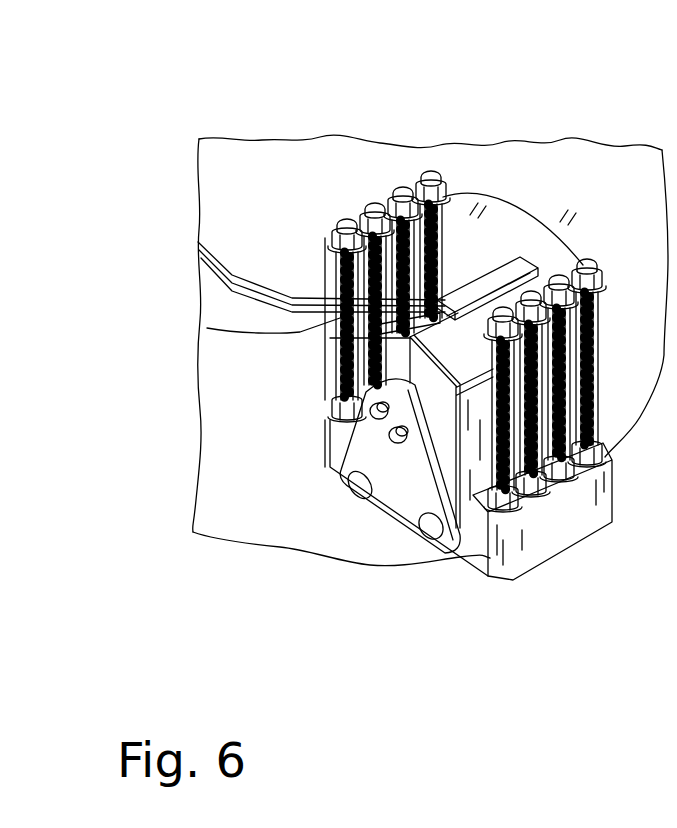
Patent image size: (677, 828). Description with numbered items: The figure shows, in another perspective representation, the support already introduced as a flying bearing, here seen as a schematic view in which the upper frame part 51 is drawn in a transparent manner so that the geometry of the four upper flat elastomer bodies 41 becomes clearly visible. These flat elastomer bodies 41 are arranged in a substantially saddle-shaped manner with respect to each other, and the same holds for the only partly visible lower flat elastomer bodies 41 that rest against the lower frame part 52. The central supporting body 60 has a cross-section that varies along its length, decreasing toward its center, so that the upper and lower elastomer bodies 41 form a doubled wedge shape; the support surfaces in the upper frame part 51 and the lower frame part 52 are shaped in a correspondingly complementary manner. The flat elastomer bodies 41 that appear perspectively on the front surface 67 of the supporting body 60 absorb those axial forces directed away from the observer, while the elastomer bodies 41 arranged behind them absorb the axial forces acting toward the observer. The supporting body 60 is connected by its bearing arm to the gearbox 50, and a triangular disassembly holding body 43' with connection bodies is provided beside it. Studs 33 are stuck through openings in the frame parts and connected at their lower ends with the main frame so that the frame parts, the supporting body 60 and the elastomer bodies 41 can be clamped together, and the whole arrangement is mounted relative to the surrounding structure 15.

The panel / base plate 15 is at (617, 183).
The studs 33 is at (432, 180).
The flat elastomer bodies 41 is at (497, 262).
The disassembly holding body 43' is at (343, 439).
The gearbox 50 is at (463, 625).
The upper frame part 51 is at (479, 217).
The lower frame part 52 is at (570, 547).
The central supporting body 60 is at (385, 505).
The front surface 67 is at (380, 385).